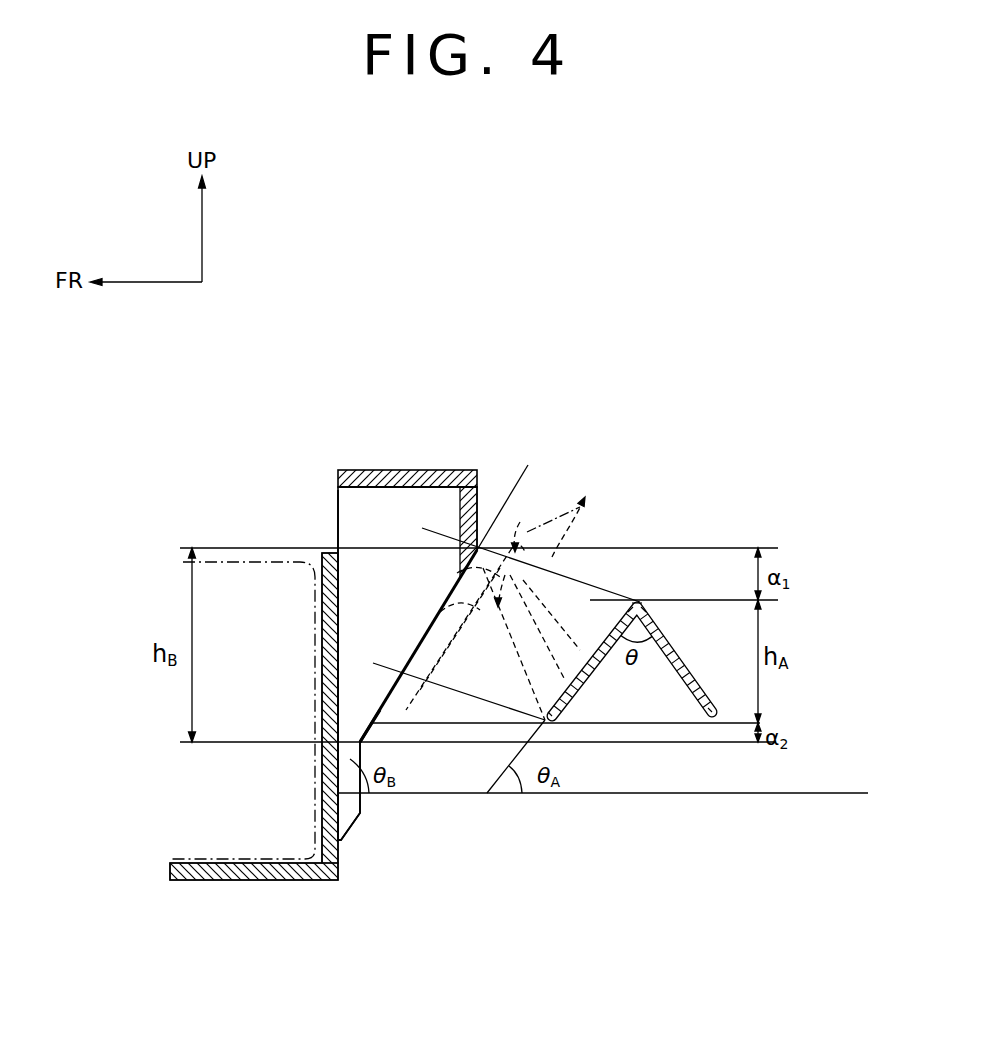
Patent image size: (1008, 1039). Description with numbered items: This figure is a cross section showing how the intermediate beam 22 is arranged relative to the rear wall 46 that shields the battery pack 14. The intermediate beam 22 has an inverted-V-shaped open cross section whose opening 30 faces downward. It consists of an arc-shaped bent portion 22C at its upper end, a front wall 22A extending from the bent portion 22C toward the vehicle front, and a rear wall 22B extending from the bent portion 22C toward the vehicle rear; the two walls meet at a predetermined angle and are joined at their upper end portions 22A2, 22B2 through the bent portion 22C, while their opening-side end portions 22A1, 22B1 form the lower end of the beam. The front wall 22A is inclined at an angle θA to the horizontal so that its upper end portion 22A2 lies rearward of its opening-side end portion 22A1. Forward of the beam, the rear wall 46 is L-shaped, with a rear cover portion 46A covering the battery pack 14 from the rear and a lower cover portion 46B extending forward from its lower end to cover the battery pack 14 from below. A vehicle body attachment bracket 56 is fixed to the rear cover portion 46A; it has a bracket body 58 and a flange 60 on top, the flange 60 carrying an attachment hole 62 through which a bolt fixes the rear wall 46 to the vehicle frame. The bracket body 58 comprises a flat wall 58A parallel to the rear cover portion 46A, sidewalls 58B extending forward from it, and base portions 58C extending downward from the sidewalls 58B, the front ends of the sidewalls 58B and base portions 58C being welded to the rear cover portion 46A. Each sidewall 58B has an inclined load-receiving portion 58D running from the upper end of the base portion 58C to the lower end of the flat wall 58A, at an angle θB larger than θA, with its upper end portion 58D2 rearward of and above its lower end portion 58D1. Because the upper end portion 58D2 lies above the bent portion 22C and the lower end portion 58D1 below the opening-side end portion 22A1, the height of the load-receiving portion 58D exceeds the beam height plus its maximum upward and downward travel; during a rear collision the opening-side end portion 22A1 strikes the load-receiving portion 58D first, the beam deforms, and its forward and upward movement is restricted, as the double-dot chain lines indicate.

The battery pack 14 is at (215, 545).
The intermediate beam 22 is at (634, 668).
The front wall 22A is at (614, 647).
The opening-side end portion 22A1 is at (583, 726).
The vehicle vertical direction upper end portion 22A2 is at (627, 602).
The rear wall 22B is at (751, 687).
The opening-side end portion 22B1 is at (722, 722).
The vehicle vertical direction upper end portion 22B2 is at (657, 602).
The bent portion 22C is at (645, 600).
The opening 30 is at (705, 724).
The rear wall 46 is at (271, 761).
The rear cover portion 46A is at (322, 690).
The lower cover portion 46B is at (245, 881).
The vehicle body attachment bracket 56 is at (447, 629).
The bracket body 58 is at (447, 660).
The flat wall 58A is at (483, 546).
The sidewall 58B is at (338, 518).
The base portion 58C is at (363, 815).
The load-receiving portion 58D is at (507, 646).
The vehicle vertical direction lower end portion 58D1 is at (370, 712).
The vehicle vertical direction upper end portion 58D2 is at (515, 488).
The flange 60 is at (452, 470).
The attachment hole 62 is at (408, 470).